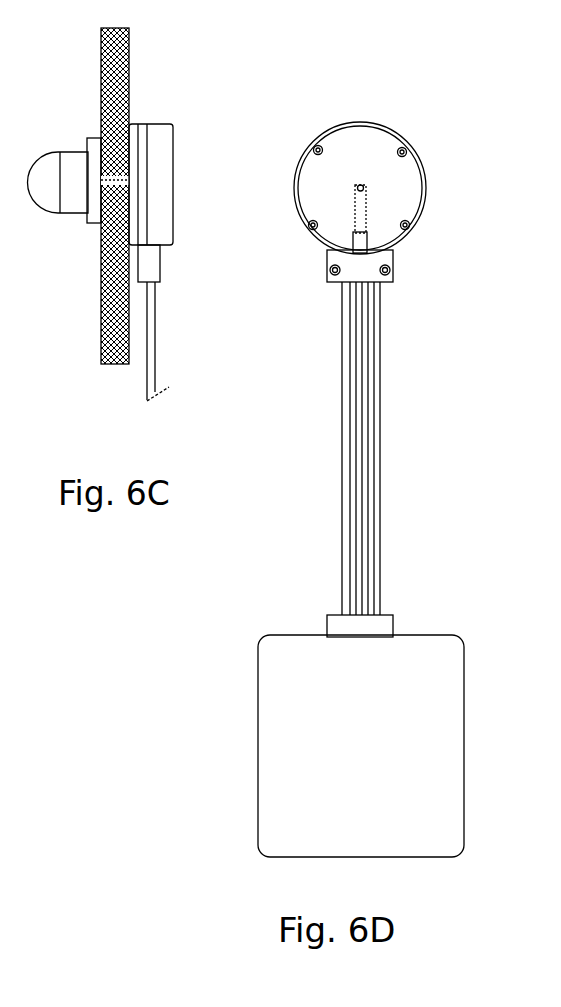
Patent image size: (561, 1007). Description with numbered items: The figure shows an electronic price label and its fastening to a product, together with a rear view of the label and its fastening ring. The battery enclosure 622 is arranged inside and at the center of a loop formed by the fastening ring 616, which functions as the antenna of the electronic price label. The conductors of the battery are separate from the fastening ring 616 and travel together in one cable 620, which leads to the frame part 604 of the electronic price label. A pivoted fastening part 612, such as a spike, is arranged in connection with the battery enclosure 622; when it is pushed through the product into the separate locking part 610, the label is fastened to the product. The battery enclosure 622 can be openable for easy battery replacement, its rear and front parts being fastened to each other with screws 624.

In FIG. 6D, the frame part 604 is at (283, 774).
In FIG. 6C, the locking part 610 is at (42, 183).
In FIG. 6C, the fastening part 612 is at (115, 181).
In FIG. 6D, the fastening part 612 is at (359, 220).
In FIG. 6D, the fastening ring 616 is at (347, 487).
In FIG. 6D, the cable 620 is at (360, 387).
In FIG. 6C, the battery enclosure 622 is at (158, 157).
In FIG. 6D, the battery enclosure 622 is at (359, 142).
In FIG. 6D, the screws 624 is at (405, 225).